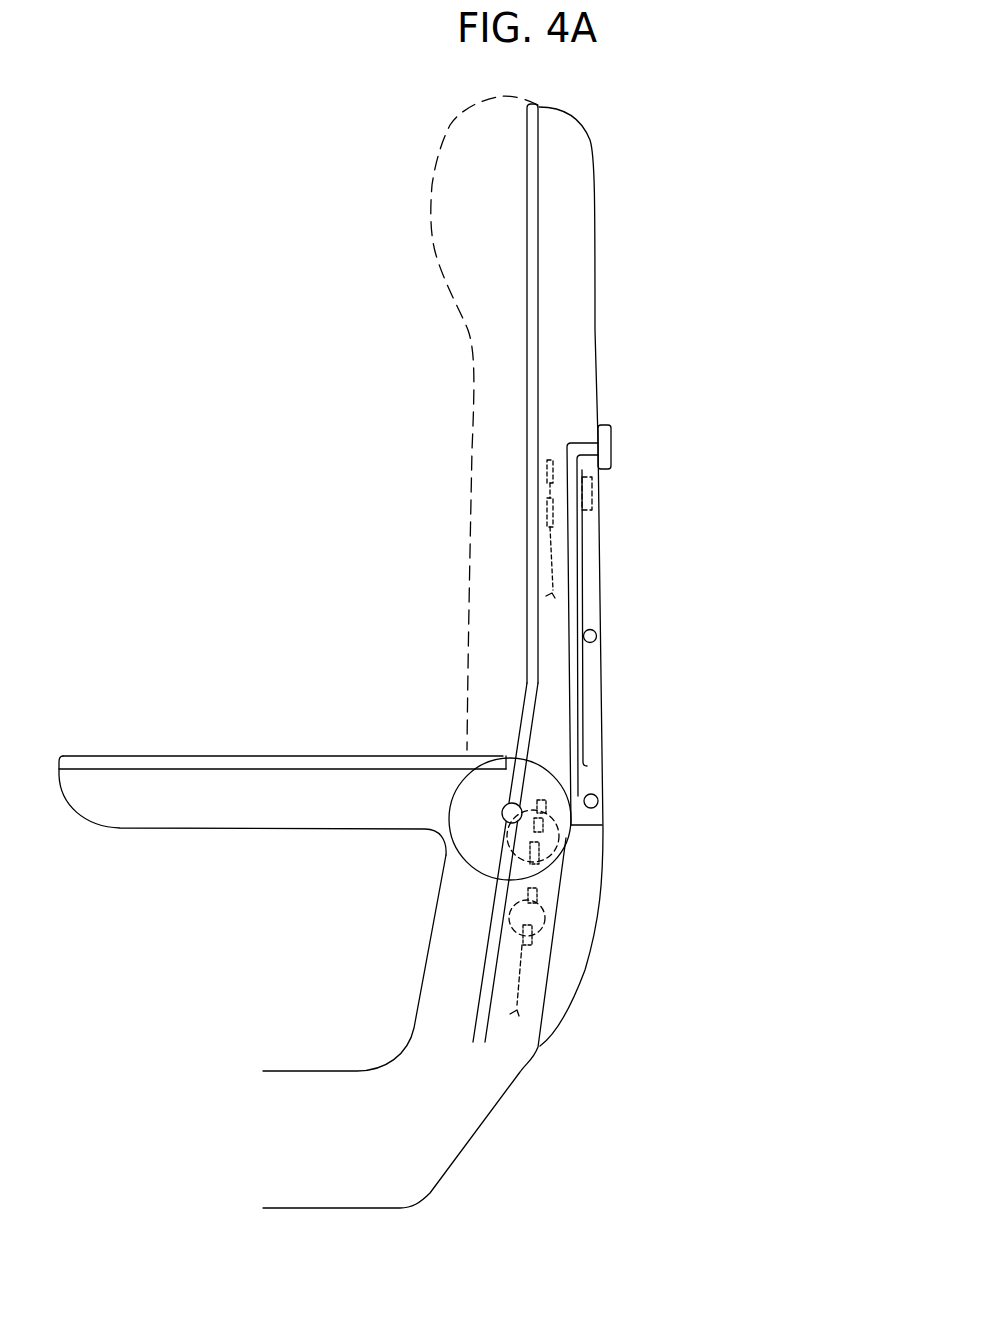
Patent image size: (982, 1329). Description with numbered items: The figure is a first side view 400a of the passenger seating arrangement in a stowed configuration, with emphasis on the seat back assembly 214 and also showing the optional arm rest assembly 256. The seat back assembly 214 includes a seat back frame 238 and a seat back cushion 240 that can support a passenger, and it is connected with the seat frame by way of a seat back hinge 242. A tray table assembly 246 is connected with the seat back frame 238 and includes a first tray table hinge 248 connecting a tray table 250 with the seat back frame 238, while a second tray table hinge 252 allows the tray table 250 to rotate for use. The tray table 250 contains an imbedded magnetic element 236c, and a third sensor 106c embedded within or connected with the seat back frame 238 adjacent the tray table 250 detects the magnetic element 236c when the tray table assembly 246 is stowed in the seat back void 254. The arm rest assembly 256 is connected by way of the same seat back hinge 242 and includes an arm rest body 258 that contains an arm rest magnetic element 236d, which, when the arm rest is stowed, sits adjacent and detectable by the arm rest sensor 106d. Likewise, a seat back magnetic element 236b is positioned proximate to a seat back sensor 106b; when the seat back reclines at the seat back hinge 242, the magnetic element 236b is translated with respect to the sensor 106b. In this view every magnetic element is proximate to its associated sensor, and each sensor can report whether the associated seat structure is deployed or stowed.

The first side view 400a is at (661, 171).
The seat back cushion 240 is at (490, 174).
The seat back frame 238 is at (571, 310).
The seat back assembly 214 is at (658, 398).
The seat back void 254 is at (586, 455).
The magnetic element 236c is at (590, 494).
The third sensor 106c is at (549, 473).
The tray table 250 is at (583, 545).
The tray table assembly 246 is at (633, 568).
The second tray table hinge 252 is at (597, 636).
The first tray table hinge 248 is at (598, 801).
The arm rest assembly 256 is at (198, 734).
The arm rest body 258 is at (357, 763).
The seat back hinge 242 is at (502, 814).
The arm rest magnetic element 236d is at (520, 832).
The arm rest sensor 106d is at (525, 862).
The seat back magnetic element 236b is at (540, 922).
The seat back sensor 106b is at (525, 945).